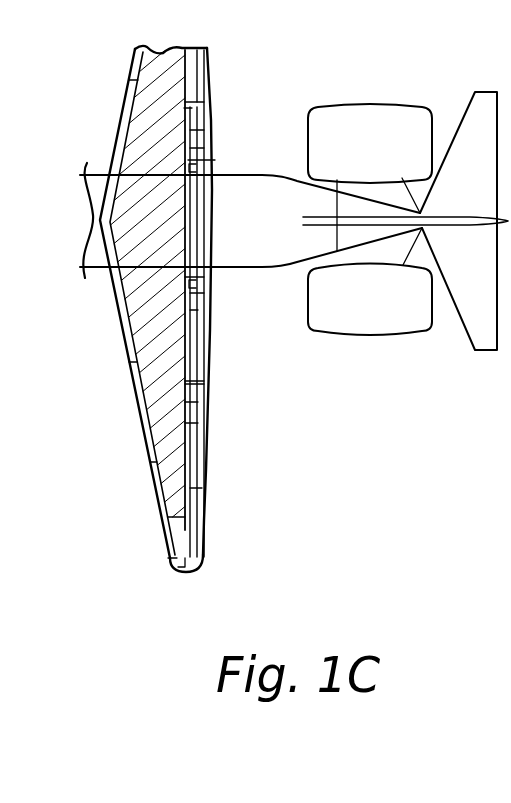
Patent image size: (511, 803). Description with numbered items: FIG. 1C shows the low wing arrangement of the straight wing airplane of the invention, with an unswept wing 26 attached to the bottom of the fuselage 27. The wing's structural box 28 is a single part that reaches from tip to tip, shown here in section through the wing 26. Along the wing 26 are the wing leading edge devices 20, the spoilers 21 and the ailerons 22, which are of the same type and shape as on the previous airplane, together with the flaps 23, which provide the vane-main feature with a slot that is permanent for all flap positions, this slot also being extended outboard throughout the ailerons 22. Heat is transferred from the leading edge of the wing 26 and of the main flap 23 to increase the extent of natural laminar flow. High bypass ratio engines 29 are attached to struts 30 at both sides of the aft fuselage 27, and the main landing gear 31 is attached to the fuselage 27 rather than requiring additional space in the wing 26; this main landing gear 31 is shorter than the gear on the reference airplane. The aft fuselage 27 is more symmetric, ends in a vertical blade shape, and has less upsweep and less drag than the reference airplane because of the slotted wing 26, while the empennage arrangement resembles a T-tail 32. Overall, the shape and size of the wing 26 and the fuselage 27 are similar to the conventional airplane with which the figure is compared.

The wing leading edge devices 20 is at (152, 488).
The spoilers 21 is at (193, 403).
The ailerons 22 is at (201, 525).
The flaps 23 is at (208, 345).
The unswept wing 26 is at (180, 572).
The fuselage 27 is at (97, 273).
The structural box 28 is at (155, 332).
The high bypass ratio engines 29 is at (352, 325).
The struts 30 is at (393, 250).
The main landing gear 31 is at (196, 282).
The T-tail 32 is at (483, 333).